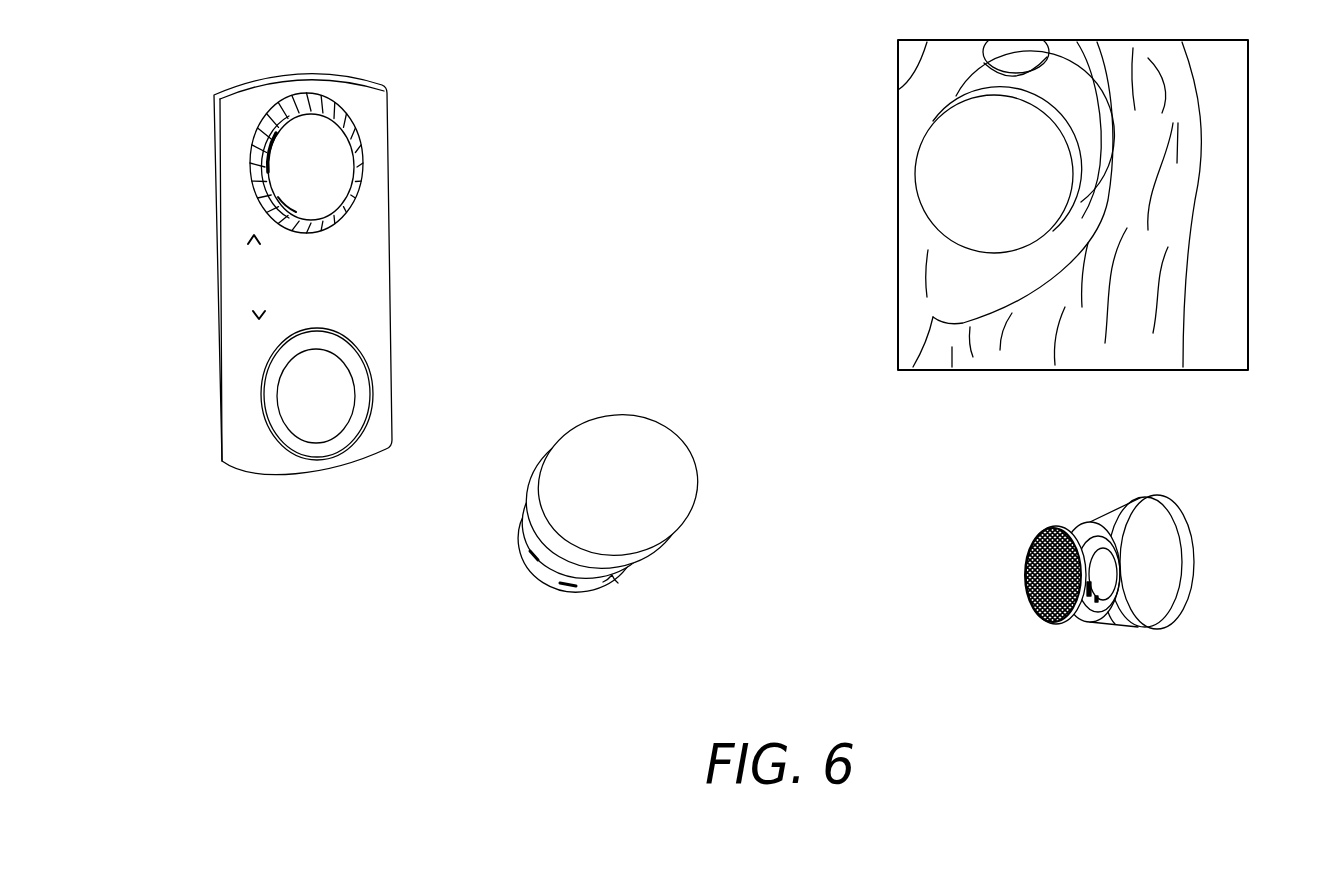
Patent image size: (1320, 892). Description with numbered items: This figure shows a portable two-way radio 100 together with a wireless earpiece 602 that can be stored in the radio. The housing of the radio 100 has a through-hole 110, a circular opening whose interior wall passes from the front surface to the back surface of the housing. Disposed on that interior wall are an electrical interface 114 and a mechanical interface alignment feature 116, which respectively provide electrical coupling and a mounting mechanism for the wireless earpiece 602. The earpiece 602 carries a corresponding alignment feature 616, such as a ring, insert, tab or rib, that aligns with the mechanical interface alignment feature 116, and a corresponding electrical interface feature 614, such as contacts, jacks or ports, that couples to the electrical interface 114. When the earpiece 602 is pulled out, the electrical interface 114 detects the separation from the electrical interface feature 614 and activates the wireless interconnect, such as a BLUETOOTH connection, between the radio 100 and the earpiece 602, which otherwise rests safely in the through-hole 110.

The portable radio 100 is at (274, 291).
The through-hole 110 is at (252, 163).
The electrical interface features 114 is at (297, 213).
The mechanical interface alignment feature 116 is at (262, 128).
The wireless earpiece 602 is at (358, 160).
The corresponding electrical interface feature 614 is at (532, 564).
The corresponding alignment feature 616 is at (612, 578).